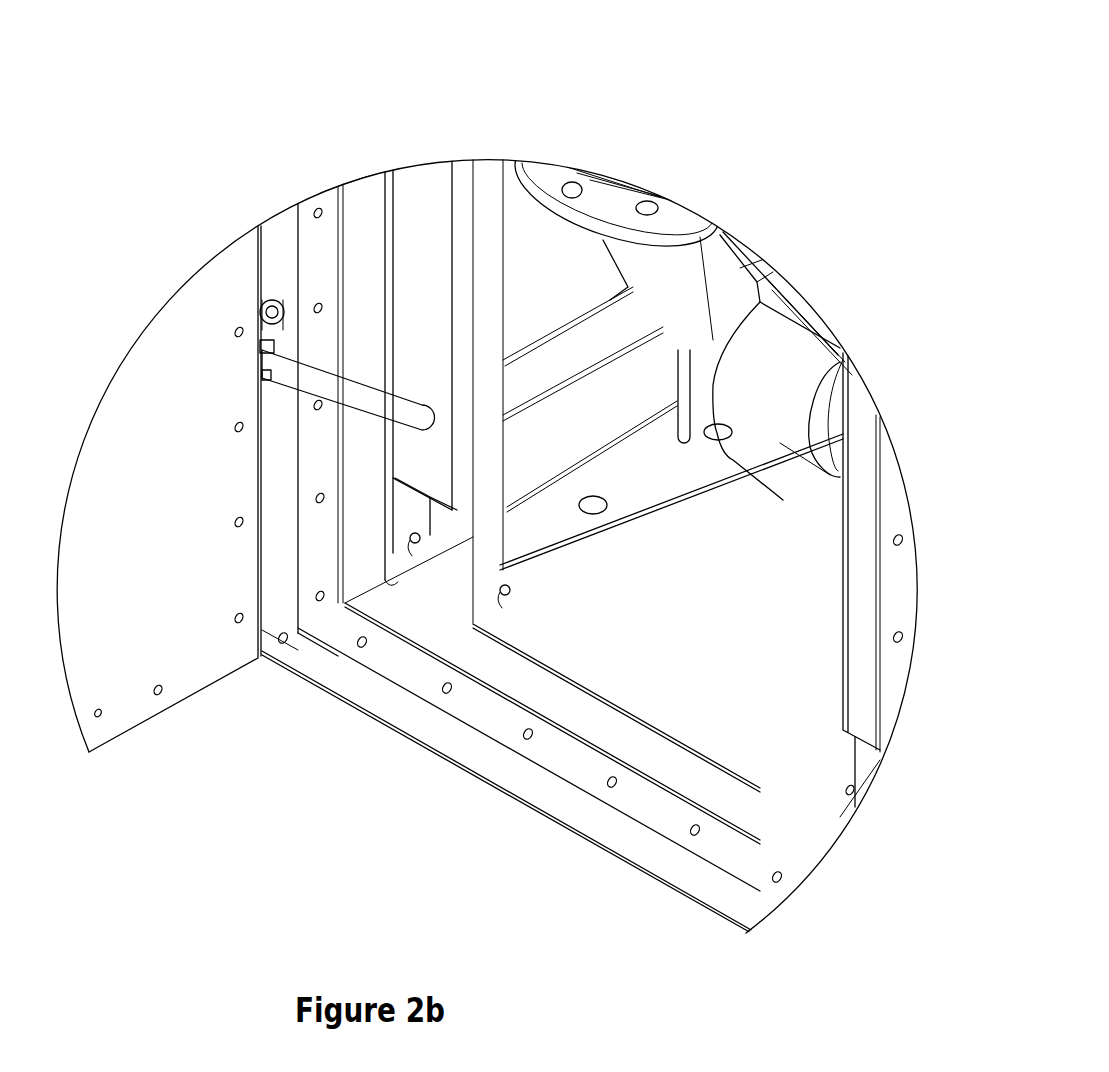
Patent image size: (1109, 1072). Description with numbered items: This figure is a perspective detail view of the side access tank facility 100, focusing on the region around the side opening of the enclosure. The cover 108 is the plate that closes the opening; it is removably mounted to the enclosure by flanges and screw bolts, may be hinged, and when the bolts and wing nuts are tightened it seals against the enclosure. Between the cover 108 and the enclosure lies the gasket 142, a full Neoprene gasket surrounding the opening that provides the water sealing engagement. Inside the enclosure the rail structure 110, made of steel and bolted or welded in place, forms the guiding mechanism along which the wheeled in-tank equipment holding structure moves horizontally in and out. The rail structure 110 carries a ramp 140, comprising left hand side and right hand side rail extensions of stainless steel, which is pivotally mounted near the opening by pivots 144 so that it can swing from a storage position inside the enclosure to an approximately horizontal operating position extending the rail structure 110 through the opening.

The side access tank facility 100 is at (680, 68).
The cover 108 is at (101, 716).
The rail structure 110 is at (580, 540).
The ramp 140 is at (425, 335).
The gasket 142 is at (340, 632).
The pivots 144 is at (417, 543).